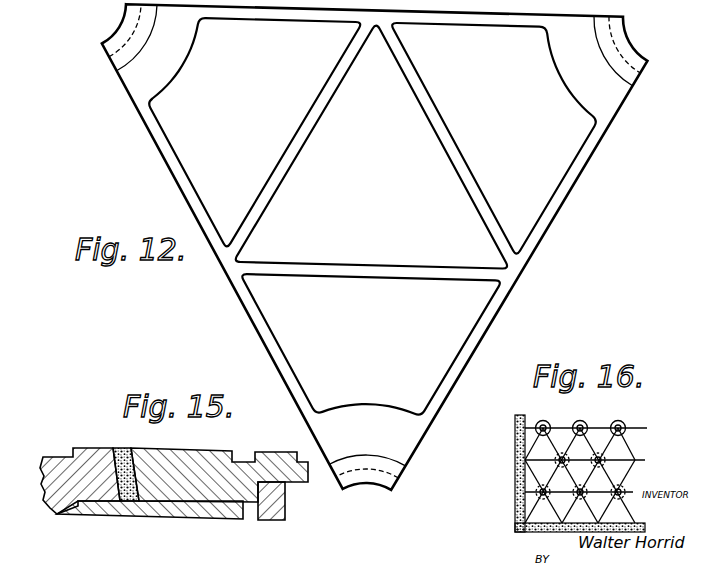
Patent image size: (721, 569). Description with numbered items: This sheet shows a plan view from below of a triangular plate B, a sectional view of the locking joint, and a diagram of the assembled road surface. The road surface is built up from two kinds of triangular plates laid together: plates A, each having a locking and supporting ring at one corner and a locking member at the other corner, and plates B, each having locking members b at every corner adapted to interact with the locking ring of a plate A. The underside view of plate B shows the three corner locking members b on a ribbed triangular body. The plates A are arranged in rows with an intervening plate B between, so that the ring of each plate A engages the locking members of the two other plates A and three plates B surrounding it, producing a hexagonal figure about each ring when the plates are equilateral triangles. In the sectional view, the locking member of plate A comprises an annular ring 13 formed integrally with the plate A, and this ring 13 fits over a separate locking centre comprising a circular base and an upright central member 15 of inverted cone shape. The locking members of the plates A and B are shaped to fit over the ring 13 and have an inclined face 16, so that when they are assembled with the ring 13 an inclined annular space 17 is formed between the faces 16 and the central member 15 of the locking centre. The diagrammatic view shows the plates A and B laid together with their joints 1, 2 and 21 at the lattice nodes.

In FIG. 12, the locking member b is at (131, 28).
In FIG. 12, the triangular plate B is at (361, 171).
In FIG. 15, the triangular plate B is at (274, 439).
In FIG. 16, the triangular plate B is at (569, 454).
In FIG. 15, the triangular plate A is at (63, 468).
In FIG. 16, the triangular plate A is at (579, 466).
In FIG. 15, the annular ring 13 is at (267, 504).
In FIG. 15, the upright central member 15 is at (165, 477).
In FIG. 15, the inclined face 16 is at (113, 452).
In FIG. 15, the inclined annular space 17 is at (131, 450).
In FIG. 16, the bolt 1 is at (618, 424).
In FIG. 16, the washer 2 is at (624, 425).
In FIG. 16, the lower washer 21 is at (627, 455).